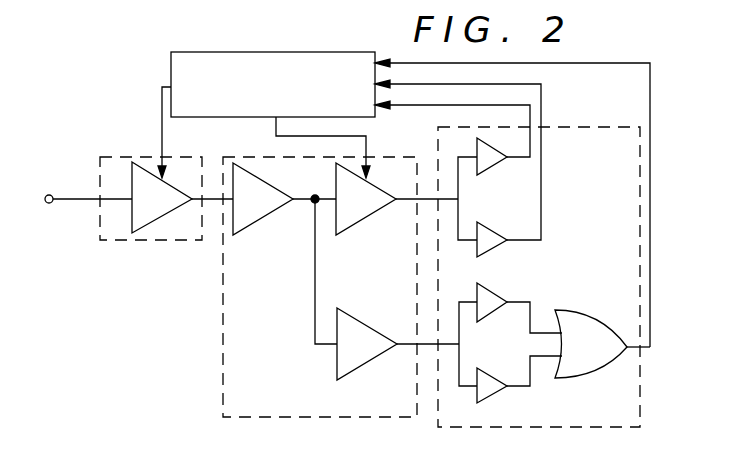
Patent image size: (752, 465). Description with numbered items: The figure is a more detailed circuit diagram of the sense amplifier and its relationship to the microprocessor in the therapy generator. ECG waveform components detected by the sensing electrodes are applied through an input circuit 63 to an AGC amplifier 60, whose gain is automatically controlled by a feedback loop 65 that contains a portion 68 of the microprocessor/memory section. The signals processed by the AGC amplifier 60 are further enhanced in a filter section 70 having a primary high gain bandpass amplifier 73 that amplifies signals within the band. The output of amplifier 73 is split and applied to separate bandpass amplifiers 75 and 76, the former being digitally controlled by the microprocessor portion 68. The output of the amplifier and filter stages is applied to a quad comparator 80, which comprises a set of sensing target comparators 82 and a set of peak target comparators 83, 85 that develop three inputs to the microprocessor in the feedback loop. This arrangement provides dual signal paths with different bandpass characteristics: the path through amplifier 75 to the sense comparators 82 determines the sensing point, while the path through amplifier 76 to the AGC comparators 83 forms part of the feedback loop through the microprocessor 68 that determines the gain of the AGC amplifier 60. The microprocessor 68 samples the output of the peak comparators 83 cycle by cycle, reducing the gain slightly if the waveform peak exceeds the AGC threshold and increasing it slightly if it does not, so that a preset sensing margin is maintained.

The AGC amplifier 60 is at (186, 228).
The input circuit 63 is at (46, 192).
The feedback loop 65 is at (161, 116).
The microprocessor portion 68 is at (243, 59).
The filter section 70 is at (238, 377).
The primary high gain bandpass amplifier 73 is at (273, 207).
The bandpass amplifier 75 is at (367, 208).
The bandpass amplifier 76 is at (370, 357).
The quad comparator 80 is at (555, 425).
The sensing target comparators 82 is at (473, 157).
The peak target comparators 83 is at (495, 298).
The peak target comparator 85 is at (591, 360).